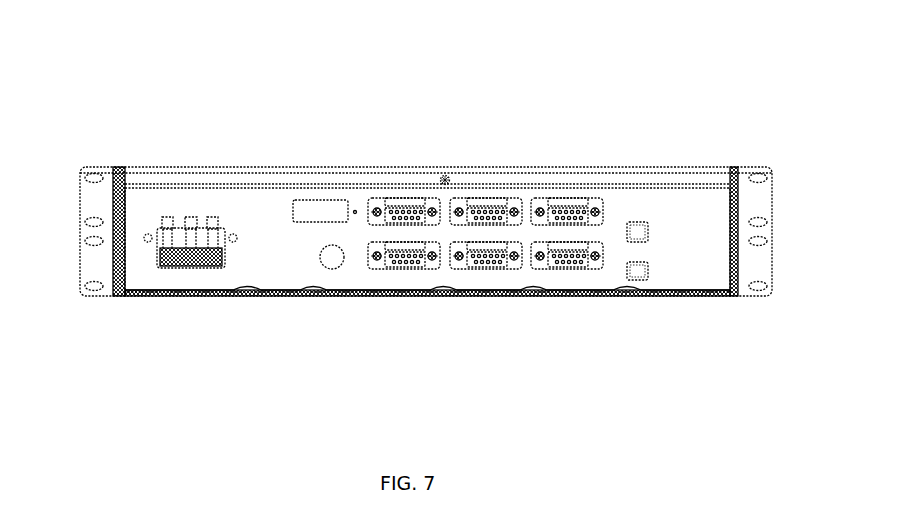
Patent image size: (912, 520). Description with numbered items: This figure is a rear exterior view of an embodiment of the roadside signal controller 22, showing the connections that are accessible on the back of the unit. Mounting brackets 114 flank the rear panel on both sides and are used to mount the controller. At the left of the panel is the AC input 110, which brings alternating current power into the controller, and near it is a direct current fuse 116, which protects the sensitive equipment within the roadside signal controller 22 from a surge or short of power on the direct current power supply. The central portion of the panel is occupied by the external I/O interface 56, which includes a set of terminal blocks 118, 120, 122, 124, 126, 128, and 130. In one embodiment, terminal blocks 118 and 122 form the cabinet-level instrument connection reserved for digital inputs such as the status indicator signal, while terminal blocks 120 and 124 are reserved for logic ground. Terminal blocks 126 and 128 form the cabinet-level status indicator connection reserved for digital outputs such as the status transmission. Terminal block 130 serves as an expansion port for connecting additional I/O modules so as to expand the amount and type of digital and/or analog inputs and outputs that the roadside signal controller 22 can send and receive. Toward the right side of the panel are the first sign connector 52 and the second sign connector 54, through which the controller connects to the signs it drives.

The roadside signal controller 22 is at (93, 86).
The external I/O interface 56 is at (344, 151).
The mounting brackets 114 is at (93, 232).
The AC input 110 is at (172, 272).
The terminal block 130 is at (303, 196).
The direct current fuse 116 is at (323, 275).
The terminal block 126 is at (397, 194).
The terminal block 122 is at (487, 194).
The terminal block 118 is at (567, 194).
The terminal block 128 is at (400, 272).
The terminal block 124 is at (487, 272).
The terminal block 120 is at (578, 272).
The first sign connector 52 is at (650, 220).
The second sign connector 54 is at (652, 282).